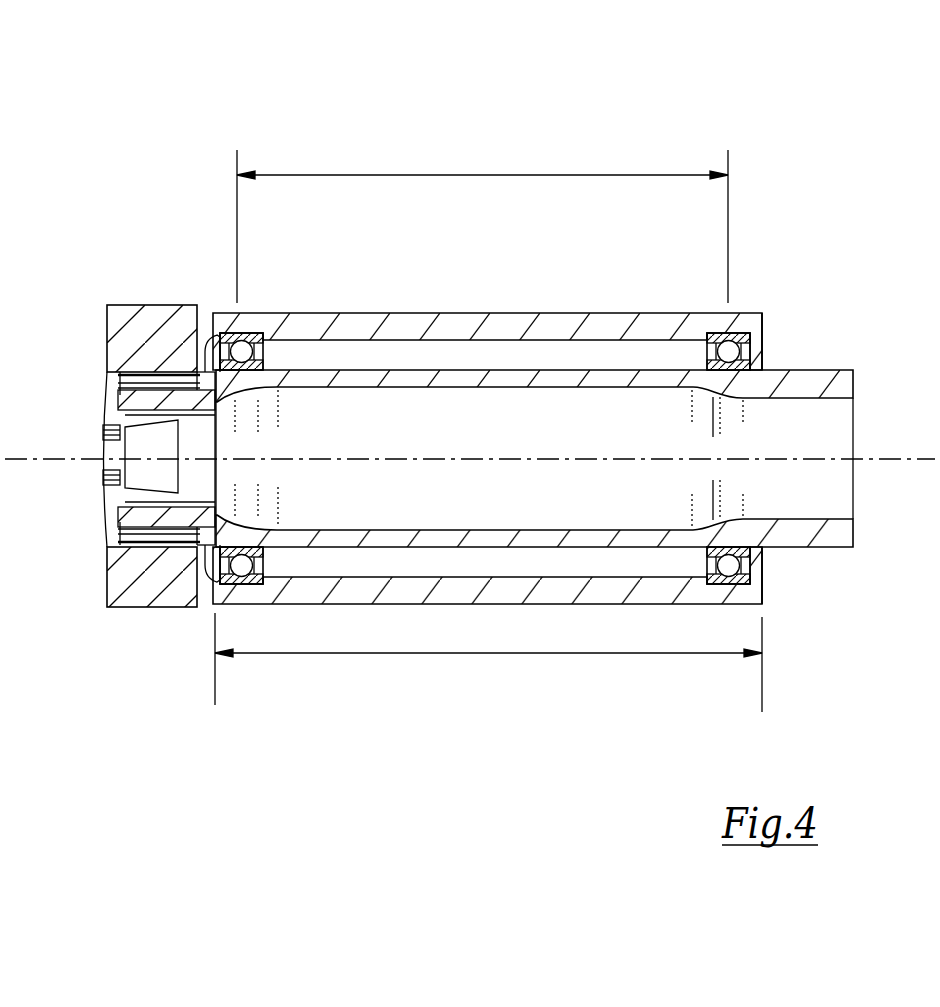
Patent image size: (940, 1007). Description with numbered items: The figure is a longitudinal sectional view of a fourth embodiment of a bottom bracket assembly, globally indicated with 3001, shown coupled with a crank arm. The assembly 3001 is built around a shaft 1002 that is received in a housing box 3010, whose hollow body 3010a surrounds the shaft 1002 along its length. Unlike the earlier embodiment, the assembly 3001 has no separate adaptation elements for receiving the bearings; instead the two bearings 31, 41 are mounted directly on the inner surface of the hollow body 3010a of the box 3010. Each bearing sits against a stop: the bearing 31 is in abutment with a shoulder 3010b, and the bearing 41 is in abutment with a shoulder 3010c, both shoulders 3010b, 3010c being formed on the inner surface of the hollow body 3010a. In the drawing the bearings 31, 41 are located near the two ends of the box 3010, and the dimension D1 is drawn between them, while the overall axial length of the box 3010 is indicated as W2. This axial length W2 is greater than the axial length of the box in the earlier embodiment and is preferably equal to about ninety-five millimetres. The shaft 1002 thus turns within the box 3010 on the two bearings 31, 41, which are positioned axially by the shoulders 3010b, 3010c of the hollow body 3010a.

The bottom bracket assembly 3001 is at (431, 107).
The bearing 41 is at (206, 327).
The housing box 3010 is at (548, 299).
The hollow body 3010a is at (364, 570).
The shoulder 3010b is at (692, 324).
The shoulder 3010c is at (273, 323).
The bearing 31 is at (759, 337).
The shaft 1002 is at (556, 564).
The distance between bearings D1 is at (482, 222).
The axial length W2 is at (523, 657).